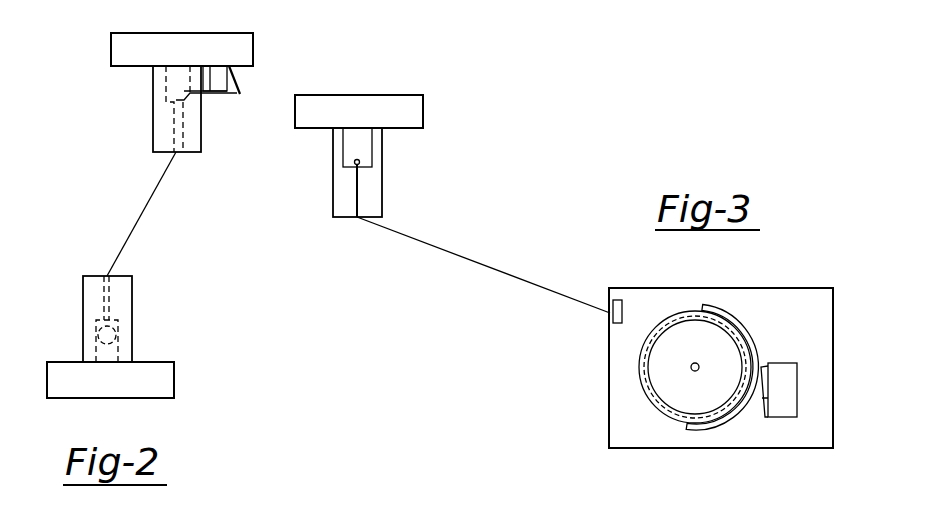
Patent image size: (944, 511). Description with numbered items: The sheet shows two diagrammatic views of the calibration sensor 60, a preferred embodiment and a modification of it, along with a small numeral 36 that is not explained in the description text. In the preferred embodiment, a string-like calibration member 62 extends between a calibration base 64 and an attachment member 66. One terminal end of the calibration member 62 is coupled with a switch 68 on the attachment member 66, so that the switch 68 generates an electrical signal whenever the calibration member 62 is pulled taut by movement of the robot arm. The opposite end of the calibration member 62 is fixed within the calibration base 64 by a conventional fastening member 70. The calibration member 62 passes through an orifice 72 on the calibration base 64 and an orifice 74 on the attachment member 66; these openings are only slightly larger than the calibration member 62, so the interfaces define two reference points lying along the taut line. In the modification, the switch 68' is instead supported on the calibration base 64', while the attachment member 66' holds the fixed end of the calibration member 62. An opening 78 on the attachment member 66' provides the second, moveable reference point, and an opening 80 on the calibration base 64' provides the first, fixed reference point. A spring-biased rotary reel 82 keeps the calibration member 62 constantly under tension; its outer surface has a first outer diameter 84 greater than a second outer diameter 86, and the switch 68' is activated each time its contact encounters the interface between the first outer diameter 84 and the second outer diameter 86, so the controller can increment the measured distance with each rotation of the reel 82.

In FIG. 2, the component 36 is at (270, 508).
In FIG. 2, the calibration sensor 60 is at (110, 158).
In FIG. 3, the calibration sensor 60 is at (543, 218).
In FIG. 2, the calibration member 62 is at (148, 200).
In FIG. 3, the calibration member 62 is at (468, 258).
In FIG. 2, the calibration base 64 is at (152, 372).
In FIG. 3, the calibration base 64' is at (677, 371).
In FIG. 2, the attachment member 66 is at (148, 49).
In FIG. 3, the attachment member 66' is at (384, 83).
In FIG. 2, the switch 68 is at (262, 54).
In FIG. 3, the switch 68' is at (809, 428).
In FIG. 2, the fastening member 70 is at (114, 336).
In FIG. 2, the orifice 72 is at (107, 276).
In FIG. 2, the orifice 74 is at (176, 152).
In FIG. 3, the opening 78 is at (357, 217).
In FIG. 3, the opening 80 is at (610, 315).
In FIG. 3, the spring-biased rotary reel 82 is at (713, 335).
In FIG. 3, the first outer diameter 84 is at (733, 415).
In FIG. 3, the second outer diameter 86 is at (678, 420).